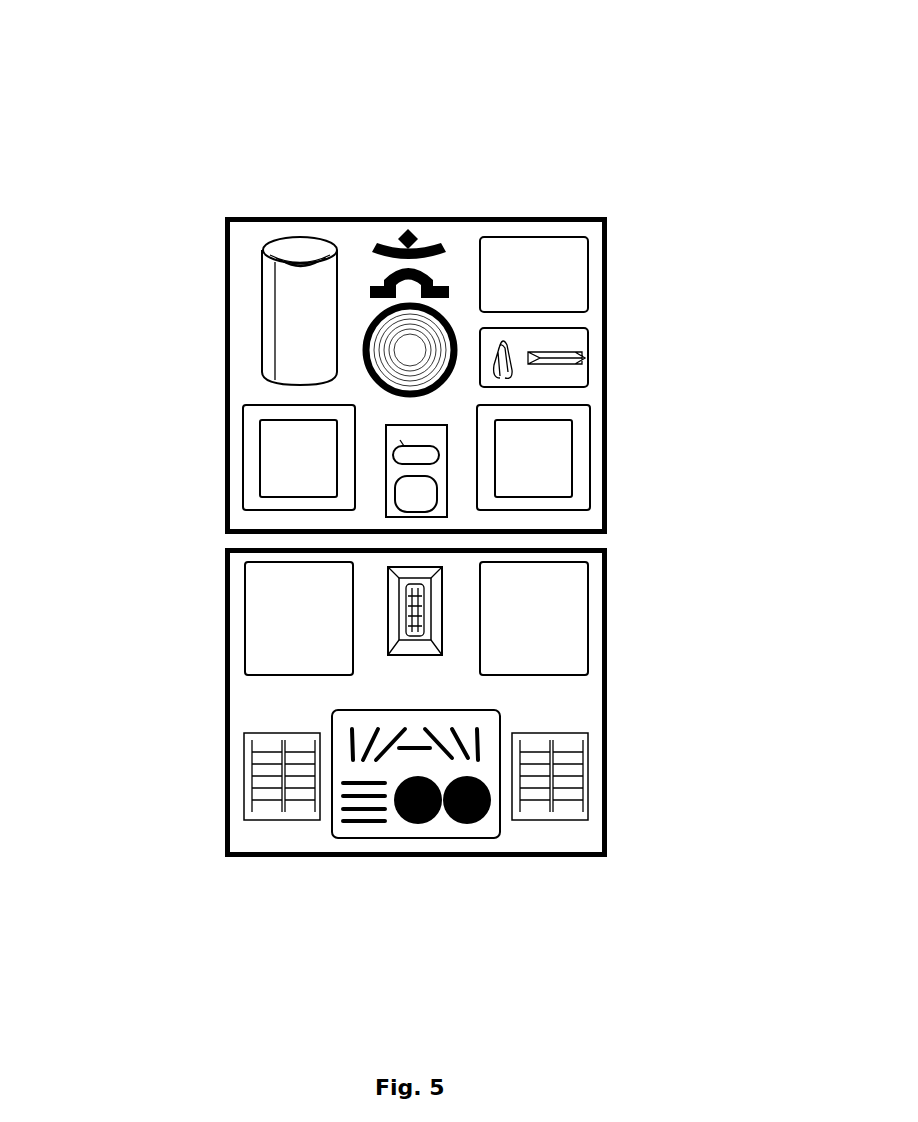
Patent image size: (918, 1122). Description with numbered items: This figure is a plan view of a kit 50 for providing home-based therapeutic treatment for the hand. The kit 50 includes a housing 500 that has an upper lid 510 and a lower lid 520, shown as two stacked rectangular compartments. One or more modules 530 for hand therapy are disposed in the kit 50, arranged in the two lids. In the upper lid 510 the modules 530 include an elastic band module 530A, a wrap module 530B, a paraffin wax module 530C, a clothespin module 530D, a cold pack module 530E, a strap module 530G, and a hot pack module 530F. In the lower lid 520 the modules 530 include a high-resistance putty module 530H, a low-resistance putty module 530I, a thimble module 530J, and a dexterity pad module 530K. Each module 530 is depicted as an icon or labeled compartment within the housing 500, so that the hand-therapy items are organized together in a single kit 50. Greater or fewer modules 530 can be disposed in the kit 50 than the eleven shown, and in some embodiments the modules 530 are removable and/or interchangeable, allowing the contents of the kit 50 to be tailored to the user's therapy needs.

The kit 50 is at (509, 63).
The housing 500 is at (290, 118).
The upper lid 510 is at (228, 282).
The lower lid 520 is at (225, 648).
The modules 530 is at (250, 320).
The elastic band module 530A is at (262, 358).
The wrap module 530B is at (361, 316).
The paraffin wax module 530C is at (527, 208).
The clothespin module 530D is at (615, 361).
The cold pack module 530E is at (213, 452).
The hot pack module 530F is at (624, 462).
The strap module 530G is at (453, 402).
The high-resistance putty module 530H is at (210, 577).
The low-resistance putty module 530I is at (627, 622).
The thimble module 530J is at (378, 677).
The dexterity pad module 530K is at (513, 717).